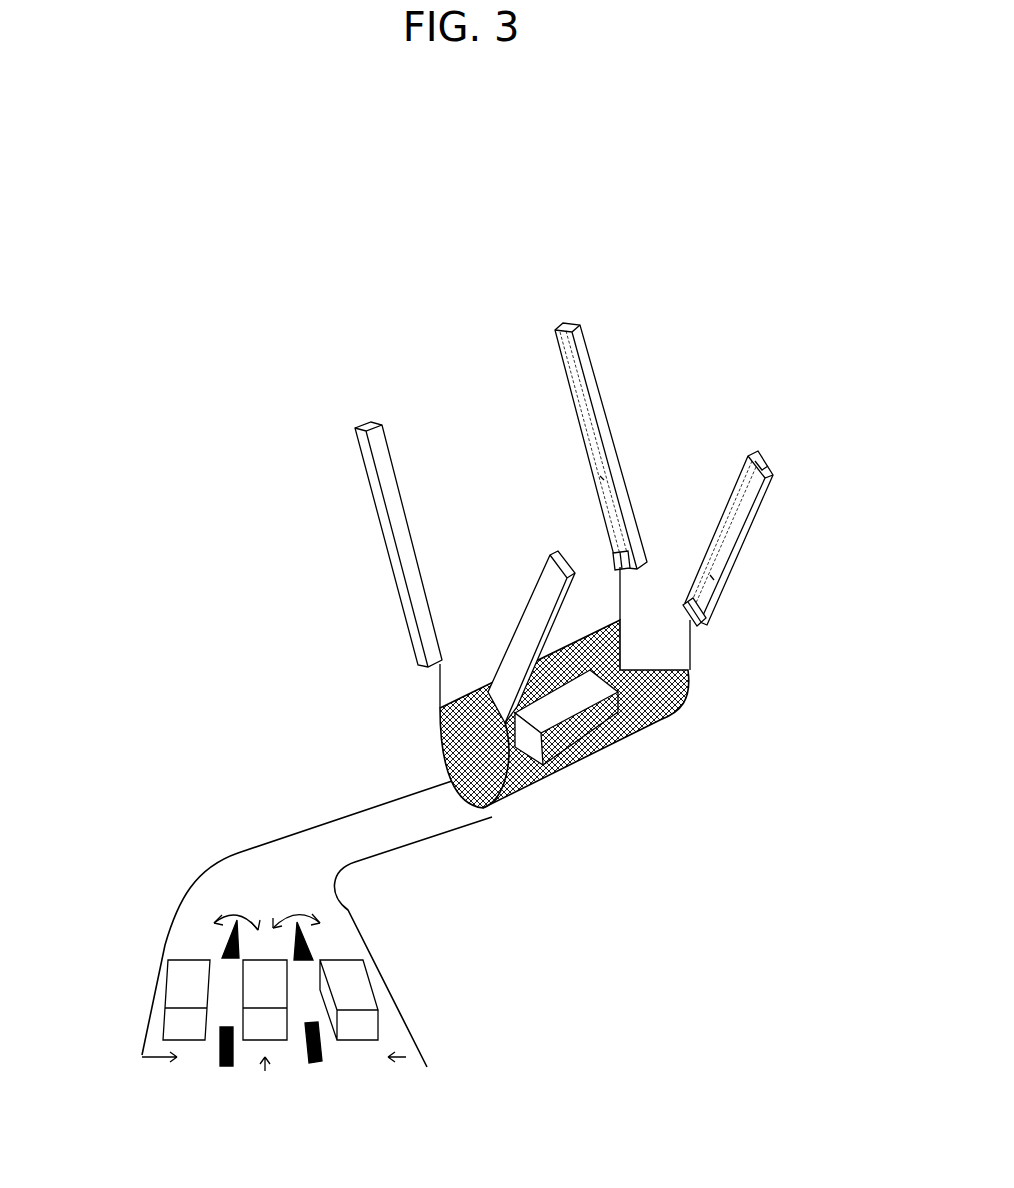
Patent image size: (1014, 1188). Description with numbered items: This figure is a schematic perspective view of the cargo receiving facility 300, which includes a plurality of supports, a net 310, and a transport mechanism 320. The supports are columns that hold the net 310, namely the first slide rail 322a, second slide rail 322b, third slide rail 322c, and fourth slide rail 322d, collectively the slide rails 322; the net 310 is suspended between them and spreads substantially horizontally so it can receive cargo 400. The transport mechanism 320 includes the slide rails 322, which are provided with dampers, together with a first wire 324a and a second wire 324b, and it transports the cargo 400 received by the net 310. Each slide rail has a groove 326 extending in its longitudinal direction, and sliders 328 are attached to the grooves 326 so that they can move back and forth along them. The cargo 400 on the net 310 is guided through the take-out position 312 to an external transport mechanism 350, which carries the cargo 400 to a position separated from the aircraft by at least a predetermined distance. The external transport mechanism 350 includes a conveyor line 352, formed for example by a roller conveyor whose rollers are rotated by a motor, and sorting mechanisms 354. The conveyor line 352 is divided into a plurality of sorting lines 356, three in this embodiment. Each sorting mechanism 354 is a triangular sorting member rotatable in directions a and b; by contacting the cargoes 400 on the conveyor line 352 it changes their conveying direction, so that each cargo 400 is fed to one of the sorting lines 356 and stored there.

The cargo receiving facility 300 is at (637, 206).
The net 310 is at (468, 690).
The take-out position 312 is at (465, 806).
The transport mechanism 320 is at (580, 292).
The slide rails 322 is at (362, 401).
The first slide rail 322a is at (366, 466).
The second slide rail 322b is at (522, 618).
The third slide rail 322c is at (590, 360).
The fourth slide rail 322d is at (774, 478).
The first wire 324a is at (438, 692).
The second wire 324b is at (695, 652).
The grooves 326 is at (602, 478).
The sliders 328 is at (616, 562).
The external transport mechanism 350 is at (238, 853).
The conveyor line 352 is at (342, 831).
The sorting mechanisms 354 is at (227, 933).
The sorting lines 356 is at (142, 1055).
The cargo 400 is at (620, 672).